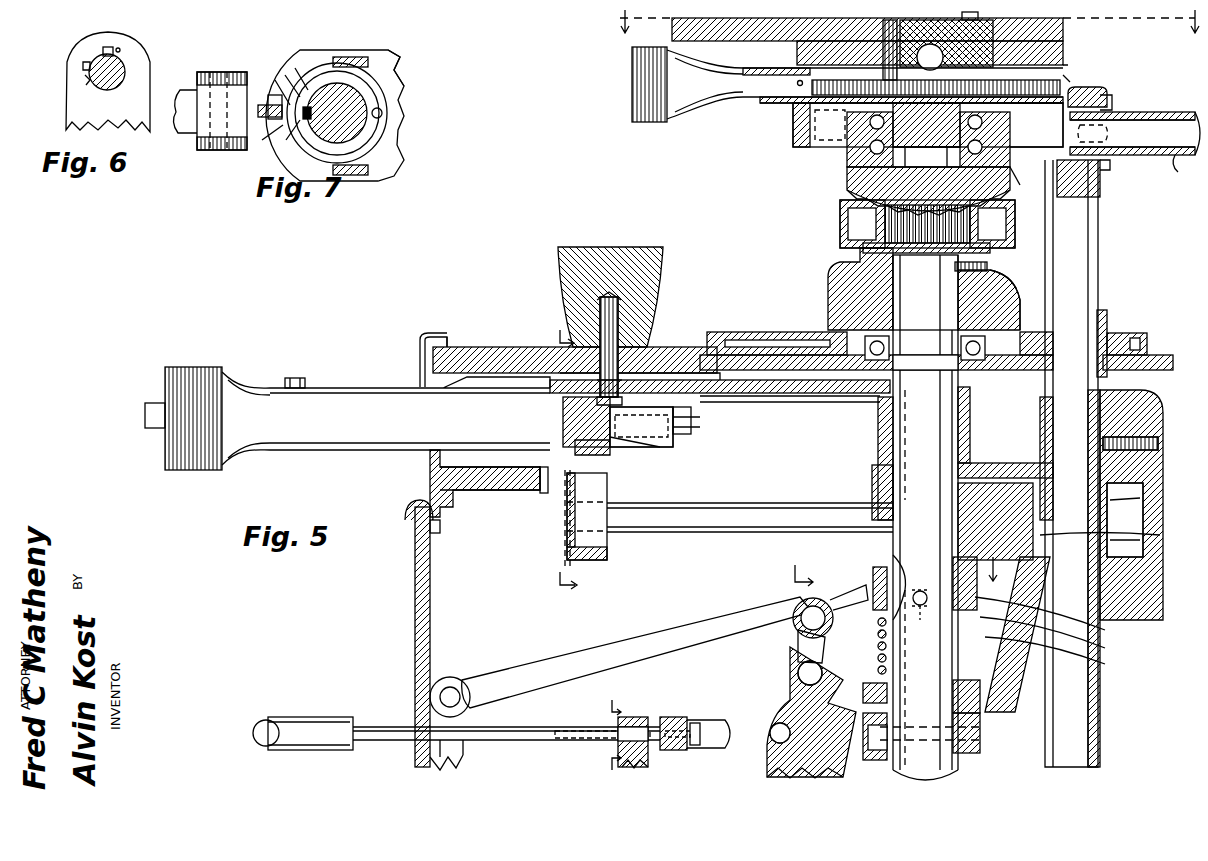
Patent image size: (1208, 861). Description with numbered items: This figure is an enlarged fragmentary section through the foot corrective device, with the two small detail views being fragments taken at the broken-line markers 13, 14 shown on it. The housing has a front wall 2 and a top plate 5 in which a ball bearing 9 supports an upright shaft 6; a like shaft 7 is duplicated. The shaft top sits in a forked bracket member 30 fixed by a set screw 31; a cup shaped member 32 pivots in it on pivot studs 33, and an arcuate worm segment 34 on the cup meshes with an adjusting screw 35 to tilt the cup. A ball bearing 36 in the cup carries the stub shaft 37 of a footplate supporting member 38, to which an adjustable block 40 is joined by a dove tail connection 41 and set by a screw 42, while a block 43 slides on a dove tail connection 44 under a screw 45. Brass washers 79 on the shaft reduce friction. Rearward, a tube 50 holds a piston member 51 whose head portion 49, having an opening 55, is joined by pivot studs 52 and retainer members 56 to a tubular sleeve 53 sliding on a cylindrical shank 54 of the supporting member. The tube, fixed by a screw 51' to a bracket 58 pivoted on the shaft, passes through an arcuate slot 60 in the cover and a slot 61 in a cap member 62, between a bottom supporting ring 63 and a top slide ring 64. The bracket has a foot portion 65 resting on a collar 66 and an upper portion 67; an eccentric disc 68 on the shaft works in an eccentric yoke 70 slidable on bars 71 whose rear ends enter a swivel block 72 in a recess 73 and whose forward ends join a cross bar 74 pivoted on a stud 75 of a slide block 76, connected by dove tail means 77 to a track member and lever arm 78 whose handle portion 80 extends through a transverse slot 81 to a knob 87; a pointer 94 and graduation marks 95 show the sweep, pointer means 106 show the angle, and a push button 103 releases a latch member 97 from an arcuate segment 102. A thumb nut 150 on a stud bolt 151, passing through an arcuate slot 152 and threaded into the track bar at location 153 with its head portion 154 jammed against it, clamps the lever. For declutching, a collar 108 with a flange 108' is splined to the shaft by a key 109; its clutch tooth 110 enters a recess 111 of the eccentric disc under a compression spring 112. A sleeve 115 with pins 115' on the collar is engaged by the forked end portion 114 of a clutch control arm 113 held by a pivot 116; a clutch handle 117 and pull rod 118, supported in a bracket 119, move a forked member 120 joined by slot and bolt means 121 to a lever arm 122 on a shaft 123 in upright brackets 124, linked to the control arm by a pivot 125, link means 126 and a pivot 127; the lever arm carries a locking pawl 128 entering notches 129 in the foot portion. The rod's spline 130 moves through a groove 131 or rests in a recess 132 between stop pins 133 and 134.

In FIG. 5, the front wall 2 is at (415, 590).
In FIG. 5, the top plate 5 is at (520, 347).
In FIG. 7, the upright shaft 6 is at (370, 142).
In FIG. 5, the upright shaft 7 is at (904, 571).
In FIG. 5, the ball bearing 9 is at (980, 370).
In FIG. 5, the section line 13 is at (562, 461).
In FIG. 5, the section line 14 is at (909, 22).
In FIG. 5, the forked bracket member 30 is at (845, 175).
In FIG. 5, the set screw 31 is at (990, 267).
In FIG. 5, the cup shaped member 32 is at (848, 157).
In FIG. 5, the pivot studs 33 is at (790, 140).
In FIG. 6, the arcuate worm segment 34 is at (70, 93).
In FIG. 5, the arcuate worm segment 34 is at (848, 195).
In FIG. 5, the adjusting screw 35 is at (870, 255).
In FIG. 5, the ball bearing 36 is at (1000, 150).
In FIG. 5, the stub shaft 37 is at (1005, 183).
In FIG. 5, the footplate supporting member 38 is at (800, 110).
In FIG. 5, the adjustable block 40 is at (1065, 56).
In FIG. 5, the dove tail connection 41 is at (1070, 72).
In FIG. 5, the screw 42 is at (770, 85).
In FIG. 5, the block 43 is at (1050, 35).
In FIG. 5, the dove tail connection 44 is at (983, 22).
In FIG. 5, the screw 45 is at (930, 44).
In FIG. 5, the enlarged head portion 49 is at (1100, 87).
In FIG. 5, the tube 50 is at (1098, 745).
In FIG. 5, the piston member 51 is at (1108, 522).
In FIG. 5, the screw 51' is at (1139, 417).
In FIG. 5, the pivot studs 52 is at (1120, 125).
In FIG. 5, the tubular sleeve 53 is at (1174, 174).
In FIG. 5, the cylindrical shank 54 is at (1135, 121).
In FIG. 5, the opening 55 is at (1108, 95).
In FIG. 5, the retainer members 56 is at (1112, 165).
In FIG. 5, the bracket 58 is at (1140, 585).
In FIG. 5, the arcuate slot 60 is at (1150, 352).
In FIG. 5, the arcuate slot 61 is at (1115, 330).
In FIG. 5, the cap member 62 is at (1020, 320).
In FIG. 5, the bottom supporting ring 63 is at (772, 335).
In FIG. 5, the top slide ring 64 is at (1140, 340).
In FIG. 7, the foot portion 65 is at (388, 50).
In FIG. 5, the foot portion 65 is at (982, 705).
In FIG. 5, the collar 66 is at (978, 755).
In FIG. 5, the upper portion 67 is at (980, 470).
In FIG. 5, the eccentric disc 68 is at (1010, 470).
In FIG. 5, the eccentric yoke 70 is at (872, 497).
In FIG. 5, the bars 71 is at (758, 530).
In FIG. 5, the swivel block 72 is at (1140, 505).
In FIG. 5, the recess 73 is at (1143, 530).
In FIG. 5, the cross bar 74 is at (567, 552).
In FIG. 5, the stud 75 is at (612, 450).
In FIG. 5, the slide block 76 is at (650, 440).
In FIG. 5, the dove tail means 77 is at (716, 393).
In FIG. 5, the track member and lever arm 78 is at (765, 398).
In FIG. 5, the brass washers 79 is at (880, 405).
In FIG. 5, the handle portion 80 is at (360, 395).
In FIG. 5, the transverse slot 81 is at (428, 470).
In FIG. 5, the knob 87 is at (232, 452).
In FIG. 5, the pointer 94 is at (420, 345).
In FIG. 5, the graduation marks 95 is at (462, 340).
In FIG. 5, the latch member 97 is at (544, 494).
In FIG. 5, the arcuate segment 102 is at (510, 488).
In FIG. 5, the push button 103 is at (155, 425).
In FIG. 5, the pointer means 106 is at (303, 373).
In FIG. 7, the collar 108 is at (366, 113).
In FIG. 5, the collar 108 is at (1060, 638).
In FIG. 5, the flange 108' is at (1065, 656).
In FIG. 7, the key 109 is at (268, 150).
In FIG. 5, the key 109 is at (893, 560).
In FIG. 7, the clutch tooth 110 is at (383, 113).
In FIG. 5, the clutch tooth 110 is at (1057, 619).
In FIG. 5, the recess 111 is at (1117, 533).
In FIG. 5, the compression spring 112 is at (1017, 634).
In FIG. 6, the clutch control arm 113 is at (125, 58).
In FIG. 7, the clutch control arm 113 is at (195, 150).
In FIG. 5, the clutch control arm 113 is at (690, 640).
In FIG. 7, the forked end portion 114 is at (300, 62).
In FIG. 5, the forked end portion 114 is at (832, 595).
In FIG. 7, the sleeve 115 is at (406, 68).
In FIG. 5, the sleeve 115 is at (907, 583).
In FIG. 7, the pins 115' is at (374, 106).
In FIG. 5, the pins 115' is at (921, 611).
In FIG. 5, the pivot 116 is at (452, 686).
In FIG. 5, the clutch handle 117 is at (272, 722).
In FIG. 5, the pull rod 118 is at (377, 725).
In FIG. 5, the bracket 119 is at (648, 755).
In FIG. 5, the forked member 120 is at (700, 720).
In FIG. 5, the slot and bolt means 121 is at (770, 733).
In FIG. 5, the lever arm 122 is at (798, 660).
In FIG. 5, the shaft 123 is at (798, 670).
In FIG. 5, the upright brackets 124 is at (768, 772).
In FIG. 5, the pivot 125 is at (793, 612).
In FIG. 7, the link means 126 is at (256, 108).
In FIG. 5, the link means 126 is at (868, 605).
In FIG. 5, the pivot 127 is at (860, 655).
In FIG. 7, the locking pawl 128 is at (270, 95).
In FIG. 5, the locking pawl 128 is at (860, 695).
In FIG. 7, the notches 129 is at (280, 78).
In FIG. 5, the notches 129 is at (863, 735).
In FIG. 5, the longitudinal spline 130 is at (568, 728).
In FIG. 6, the groove 131 is at (107, 47).
In FIG. 5, the groove 131 is at (638, 717).
In FIG. 6, the recess 132 is at (85, 62).
In FIG. 6, the stop pin 133 is at (86, 85).
In FIG. 6, the stop pin 134 is at (121, 50).
In FIG. 5, the thumb nut 150 is at (645, 280).
In FIG. 5, the stud bolt 151 is at (620, 310).
In FIG. 5, the arcuate slot 152 is at (620, 380).
In FIG. 5, the location 153 is at (625, 400).
In FIG. 5, the head portion 154 is at (627, 422).